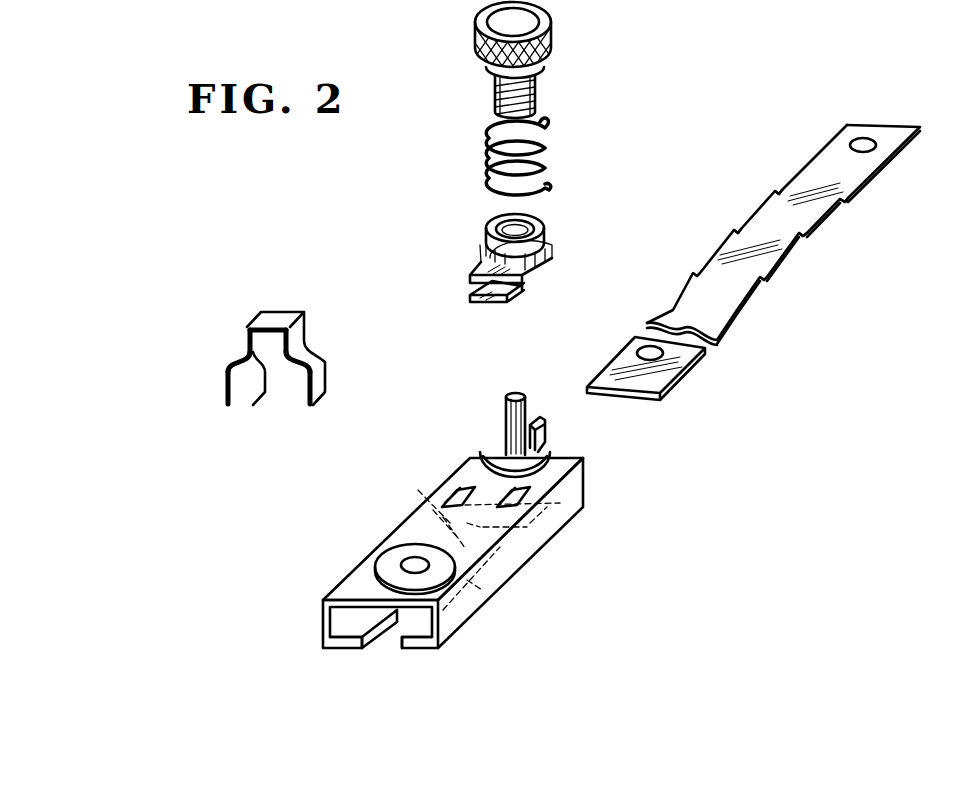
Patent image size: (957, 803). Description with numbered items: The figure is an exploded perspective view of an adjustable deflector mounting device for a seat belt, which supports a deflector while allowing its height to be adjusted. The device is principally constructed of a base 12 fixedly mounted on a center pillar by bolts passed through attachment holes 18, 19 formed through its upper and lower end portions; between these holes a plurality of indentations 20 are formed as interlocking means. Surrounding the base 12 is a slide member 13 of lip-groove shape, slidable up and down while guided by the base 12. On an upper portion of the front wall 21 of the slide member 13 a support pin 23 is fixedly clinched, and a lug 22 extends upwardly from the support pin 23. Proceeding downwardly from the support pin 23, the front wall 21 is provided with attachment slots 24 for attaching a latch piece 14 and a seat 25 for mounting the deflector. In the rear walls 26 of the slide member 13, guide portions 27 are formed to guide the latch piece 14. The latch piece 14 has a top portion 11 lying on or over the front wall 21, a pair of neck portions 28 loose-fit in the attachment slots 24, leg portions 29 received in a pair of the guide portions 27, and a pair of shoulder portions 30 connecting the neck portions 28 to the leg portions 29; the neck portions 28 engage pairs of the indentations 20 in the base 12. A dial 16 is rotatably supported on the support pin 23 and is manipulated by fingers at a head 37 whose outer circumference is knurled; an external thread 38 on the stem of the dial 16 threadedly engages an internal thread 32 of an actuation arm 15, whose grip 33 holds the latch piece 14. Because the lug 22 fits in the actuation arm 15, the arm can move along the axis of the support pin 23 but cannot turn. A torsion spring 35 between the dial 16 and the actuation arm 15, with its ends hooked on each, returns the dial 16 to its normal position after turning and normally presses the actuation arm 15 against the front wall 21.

The top portion 11 is at (276, 317).
The base 12 is at (762, 222).
The slide member 13 is at (459, 521).
The latch piece 14 is at (271, 312).
The actuation arm 15 is at (496, 247).
The dial 16 is at (509, 60).
The attachment hole 18 is at (860, 140).
The attachment hole 19 is at (645, 350).
The indentations 20 is at (763, 208).
The front wall 21 is at (355, 580).
The lug 22 is at (542, 418).
The support pin 23 is at (503, 420).
The attachment slots 24 is at (452, 493).
The seat 25 is at (387, 557).
The rear walls 26 is at (346, 648).
The guide portions 27 is at (418, 490).
The neck portions 28 is at (243, 335).
The leg portions 29 is at (225, 393).
The shoulder portions 30 is at (233, 358).
The internal thread 32 is at (540, 224).
The grip 33 is at (470, 283).
The torsion spring 35 is at (490, 160).
The head 37 is at (552, 40).
The external thread 38 is at (535, 95).